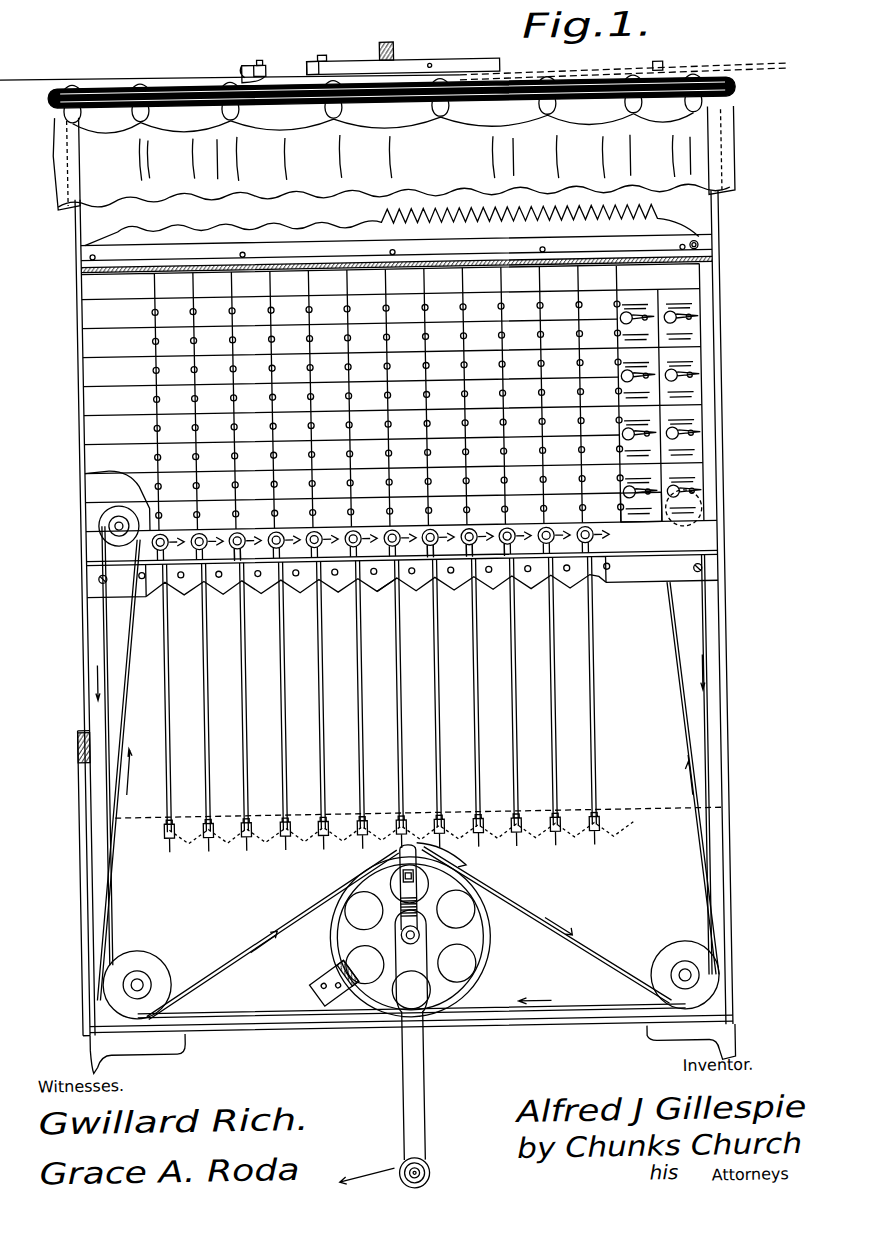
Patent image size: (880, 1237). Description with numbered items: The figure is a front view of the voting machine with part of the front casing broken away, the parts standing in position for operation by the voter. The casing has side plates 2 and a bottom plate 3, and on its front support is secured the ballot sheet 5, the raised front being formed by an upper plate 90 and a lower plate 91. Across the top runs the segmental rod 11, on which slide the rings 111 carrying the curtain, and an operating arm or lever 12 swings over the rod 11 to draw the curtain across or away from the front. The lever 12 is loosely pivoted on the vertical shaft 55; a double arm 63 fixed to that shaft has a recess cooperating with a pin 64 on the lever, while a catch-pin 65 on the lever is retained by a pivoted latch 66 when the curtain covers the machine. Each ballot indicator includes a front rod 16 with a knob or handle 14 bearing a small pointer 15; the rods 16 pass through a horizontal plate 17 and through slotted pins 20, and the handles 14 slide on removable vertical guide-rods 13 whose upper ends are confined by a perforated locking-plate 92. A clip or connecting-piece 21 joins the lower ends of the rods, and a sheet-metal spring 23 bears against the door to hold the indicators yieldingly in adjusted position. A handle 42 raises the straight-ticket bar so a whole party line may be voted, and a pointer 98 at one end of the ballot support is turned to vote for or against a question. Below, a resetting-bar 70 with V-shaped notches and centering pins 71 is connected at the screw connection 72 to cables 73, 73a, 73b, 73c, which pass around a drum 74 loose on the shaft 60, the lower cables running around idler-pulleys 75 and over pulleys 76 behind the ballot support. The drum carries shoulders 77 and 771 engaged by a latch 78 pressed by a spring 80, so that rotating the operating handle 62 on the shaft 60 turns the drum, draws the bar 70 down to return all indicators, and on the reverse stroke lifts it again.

The side plates 2 is at (88, 424).
The bottom plate 3 is at (346, 1027).
The ballot sheet 5 is at (92, 381).
The segmental rod 11 is at (482, 122).
The curtain operating lever 12 is at (130, 82).
The vertical guide-rods 13 is at (344, 272).
The operating knob 14 is at (431, 548).
The pointers 15 is at (380, 544).
The front indicator rod 16 is at (322, 630).
The horizontal plate 17 is at (386, 584).
The slotted pins 20 is at (496, 562).
The connecting-piece 21 is at (525, 842).
The friction spring 23 is at (598, 830).
The straight-ticket handle 42 is at (76, 839).
The vertical shaft 55 is at (398, 42).
The handle shaft 60 is at (405, 945).
The operating handle 62 is at (420, 1084).
The double arm 63 is at (430, 60).
The pin 64 is at (332, 54).
The catch-pin 65 is at (270, 58).
The pivoted latch 66 is at (252, 67).
The resetting-bar 70 is at (95, 590).
The centering pins 71 is at (612, 571).
The cable connection 72 is at (705, 574).
The cable 73 is at (678, 691).
The cable 73a is at (300, 996).
The cable 73b is at (300, 914).
The cable 73c is at (506, 1009).
The cable drum 74 is at (410, 936).
The idler-pulleys 75 is at (411, 979).
The pulleys 76 is at (100, 521).
The shoulder 77 is at (475, 902).
The latch 78 is at (407, 845).
The latch spring 80 is at (412, 900).
The upper plate 90 is at (643, 557).
The lower plate 91 is at (573, 262).
The perforated locking-plate 92 is at (510, 240).
The question pointer 98 is at (690, 439).
The curtain rings 111 is at (368, 120).
The shoulder 771 is at (380, 858).